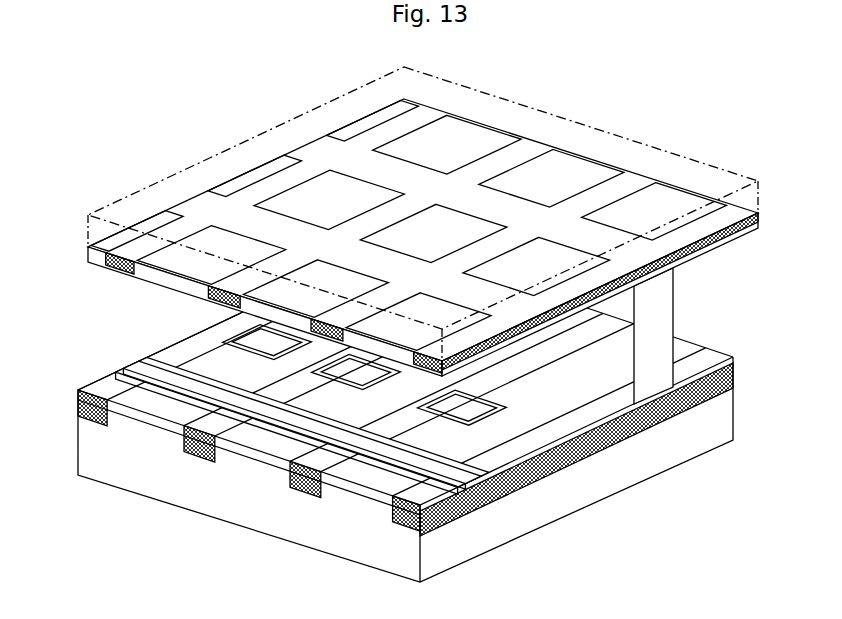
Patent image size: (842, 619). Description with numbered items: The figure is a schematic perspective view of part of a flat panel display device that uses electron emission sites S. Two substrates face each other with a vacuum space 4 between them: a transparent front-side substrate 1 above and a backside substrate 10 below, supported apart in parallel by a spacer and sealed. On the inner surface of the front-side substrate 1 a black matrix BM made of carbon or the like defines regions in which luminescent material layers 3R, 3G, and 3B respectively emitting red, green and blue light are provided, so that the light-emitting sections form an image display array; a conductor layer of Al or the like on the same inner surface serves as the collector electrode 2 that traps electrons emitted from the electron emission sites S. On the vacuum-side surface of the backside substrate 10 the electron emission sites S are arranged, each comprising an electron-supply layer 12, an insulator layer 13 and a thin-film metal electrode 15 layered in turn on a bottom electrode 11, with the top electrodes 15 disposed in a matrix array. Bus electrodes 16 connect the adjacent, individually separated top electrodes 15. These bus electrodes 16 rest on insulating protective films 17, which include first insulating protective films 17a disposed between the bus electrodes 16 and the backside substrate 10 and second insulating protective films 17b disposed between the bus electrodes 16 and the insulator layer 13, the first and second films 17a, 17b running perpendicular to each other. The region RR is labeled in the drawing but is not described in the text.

The front-side substrate 1 is at (650, 134).
The collector electrode 2 is at (762, 220).
The red luminescent material layer 3R is at (329, 199).
The green luminescent material layer 3G is at (433, 234).
The blue luminescent material layer 3B is at (536, 267).
The vacuum space 4 is at (713, 274).
The backside substrate 10 is at (590, 493).
The bottom electrode 11 is at (240, 455).
The electron-supply layer 12 is at (132, 417).
The insulator layer 13 is at (82, 415).
The thin-film metal electrode 15 is at (113, 400).
The bus electrode 16 is at (123, 365).
The insulating protective film 17 is at (735, 373).
The first insulating protective film 17a is at (180, 445).
The second insulating protective film 17b is at (628, 422).
The black matrix BM is at (217, 217).
The rubbing region RR is at (657, 328).
The electron emission site S is at (464, 512).